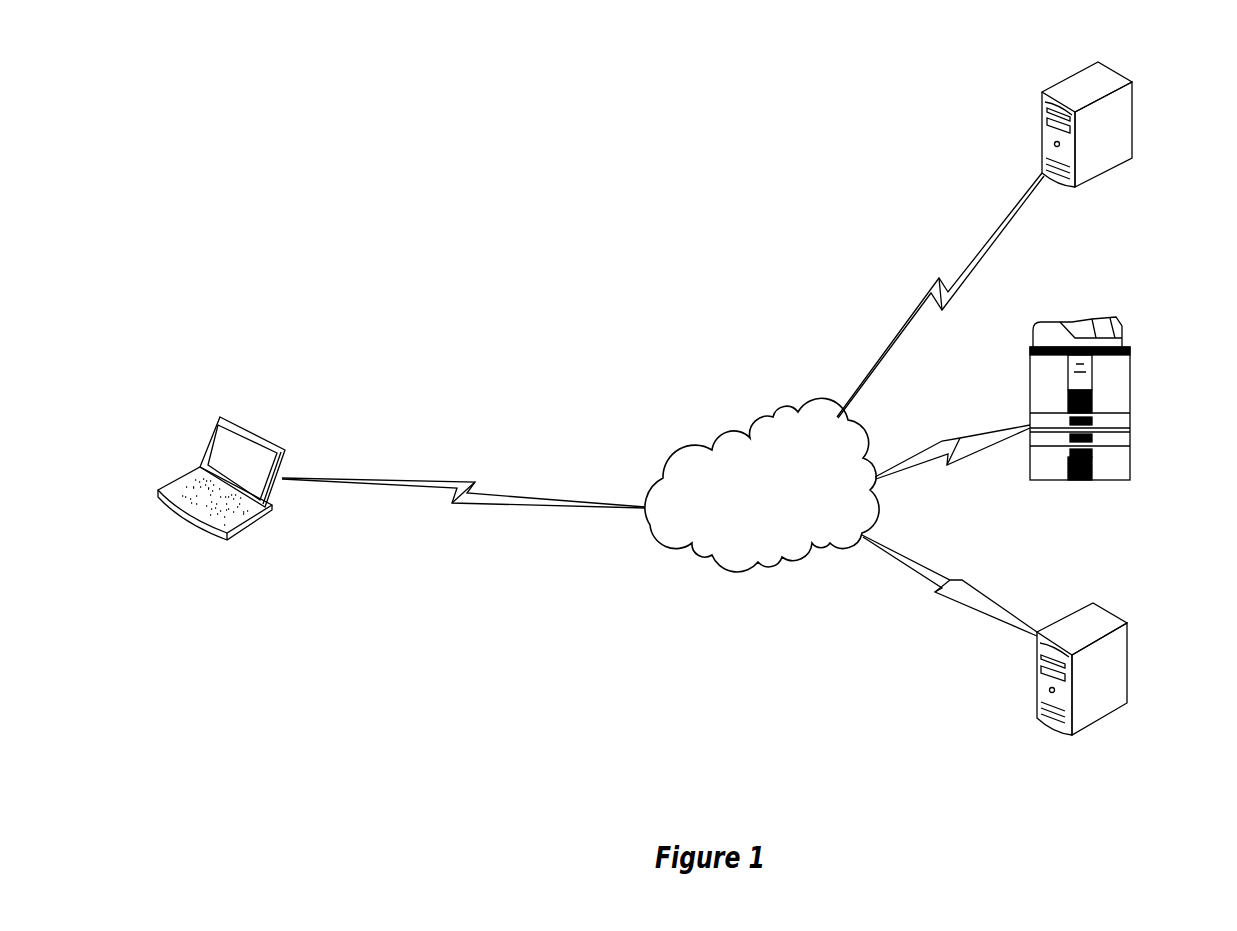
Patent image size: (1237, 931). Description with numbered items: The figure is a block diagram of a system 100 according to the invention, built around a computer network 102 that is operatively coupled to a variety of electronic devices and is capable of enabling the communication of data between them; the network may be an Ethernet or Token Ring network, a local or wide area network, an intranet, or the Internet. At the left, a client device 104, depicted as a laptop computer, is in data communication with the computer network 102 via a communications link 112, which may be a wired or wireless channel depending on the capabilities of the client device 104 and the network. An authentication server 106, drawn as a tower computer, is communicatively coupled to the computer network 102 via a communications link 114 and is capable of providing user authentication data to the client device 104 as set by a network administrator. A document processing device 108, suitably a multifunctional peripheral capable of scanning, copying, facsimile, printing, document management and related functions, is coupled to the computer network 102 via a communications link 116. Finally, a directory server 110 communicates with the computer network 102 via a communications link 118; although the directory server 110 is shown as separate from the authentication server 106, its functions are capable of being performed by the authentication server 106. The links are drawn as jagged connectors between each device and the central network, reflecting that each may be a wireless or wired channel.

The system 100 is at (770, 118).
The computer network 102 is at (722, 427).
The client device 104 is at (276, 441).
The authentication server 106 is at (1132, 82).
The document processing device 108 is at (1130, 343).
The directory server 110 is at (1127, 625).
The communications link 112 is at (450, 498).
The communications link 114 is at (926, 298).
The communications link 116 is at (944, 442).
The communications link 118 is at (962, 581).